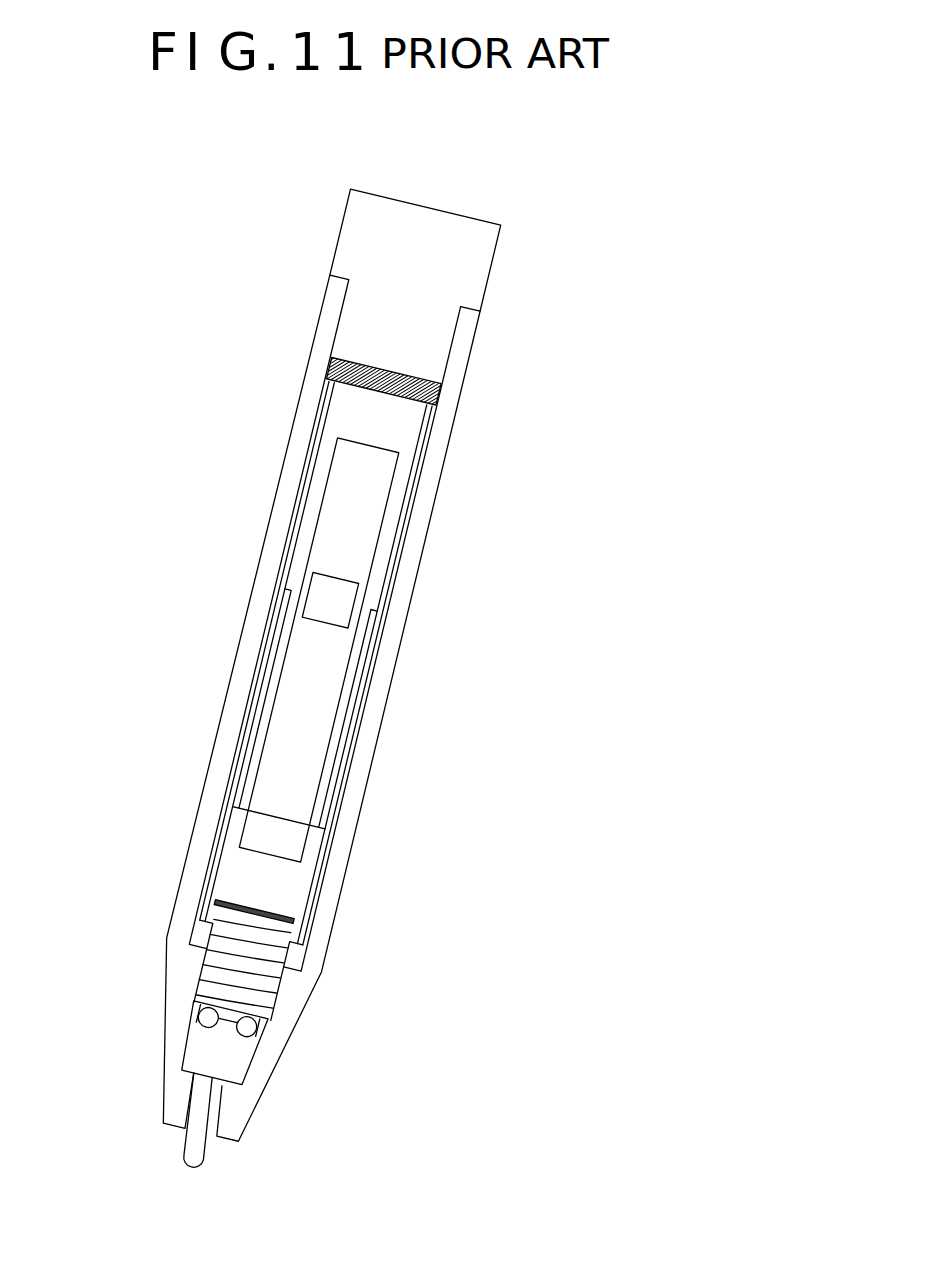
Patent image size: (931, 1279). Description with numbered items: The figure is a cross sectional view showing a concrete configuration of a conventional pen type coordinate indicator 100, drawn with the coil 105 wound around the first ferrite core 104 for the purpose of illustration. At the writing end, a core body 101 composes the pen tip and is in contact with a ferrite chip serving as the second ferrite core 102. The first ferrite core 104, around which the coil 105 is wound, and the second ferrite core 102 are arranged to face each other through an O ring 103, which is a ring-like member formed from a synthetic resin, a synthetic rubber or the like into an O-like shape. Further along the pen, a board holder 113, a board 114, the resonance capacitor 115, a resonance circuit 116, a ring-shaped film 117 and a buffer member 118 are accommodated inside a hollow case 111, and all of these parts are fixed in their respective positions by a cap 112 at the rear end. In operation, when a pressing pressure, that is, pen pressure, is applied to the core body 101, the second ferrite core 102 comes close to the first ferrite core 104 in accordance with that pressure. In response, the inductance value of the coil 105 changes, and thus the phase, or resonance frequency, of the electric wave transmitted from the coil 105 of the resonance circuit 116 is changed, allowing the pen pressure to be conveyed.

The pen type coordinate indicator 100 is at (544, 224).
The core body 101 is at (194, 1165).
The ferrite chip (second ferrite core) 102 is at (210, 1057).
The O ring 103 is at (250, 1030).
The ferrite core (first ferrite core) 104 is at (205, 937).
The coil 105 is at (262, 957).
The hollow case 111 is at (473, 343).
The cap 112 is at (377, 210).
The board holder 113 is at (388, 432).
The board 114 is at (372, 512).
The resonance capacitor 115 is at (310, 586).
The resonance circuit 116 is at (372, 613).
The ring-shaped film 117 is at (298, 940).
The buffer member 118 is at (340, 371).